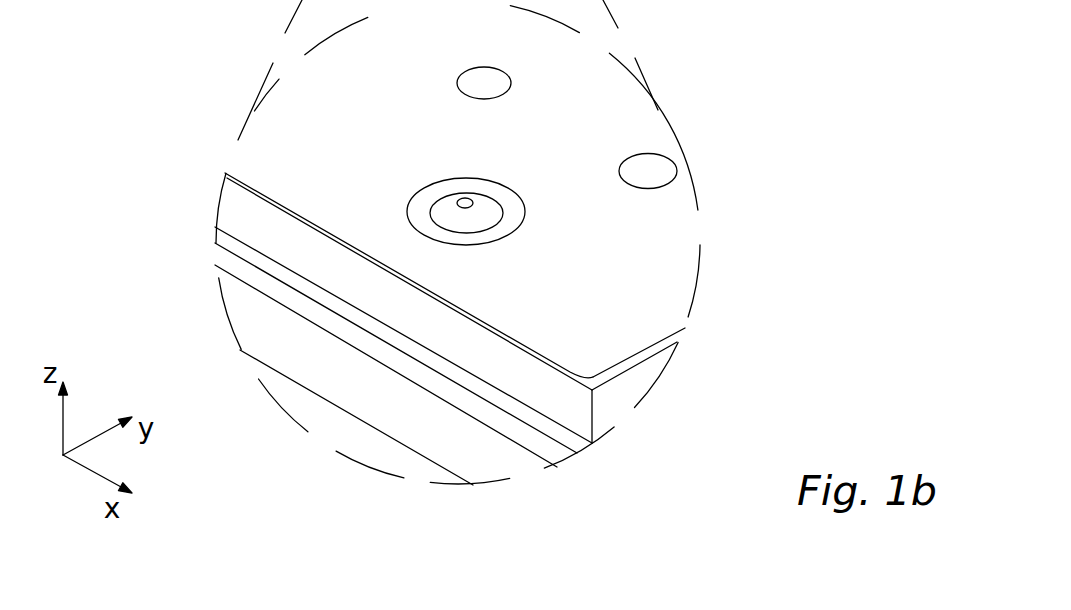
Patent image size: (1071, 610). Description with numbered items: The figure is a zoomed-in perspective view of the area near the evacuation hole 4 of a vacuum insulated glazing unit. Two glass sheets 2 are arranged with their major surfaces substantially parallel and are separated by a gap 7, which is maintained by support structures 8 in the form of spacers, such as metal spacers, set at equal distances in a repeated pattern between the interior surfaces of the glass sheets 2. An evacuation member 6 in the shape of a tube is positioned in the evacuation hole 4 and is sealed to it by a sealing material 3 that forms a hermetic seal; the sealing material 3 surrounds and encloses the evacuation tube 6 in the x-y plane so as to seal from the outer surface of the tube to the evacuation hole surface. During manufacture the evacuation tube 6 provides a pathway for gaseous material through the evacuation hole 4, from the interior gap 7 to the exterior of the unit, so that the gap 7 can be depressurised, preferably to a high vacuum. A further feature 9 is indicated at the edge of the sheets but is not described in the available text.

The glass sheets 2 is at (298, 295).
The sealing material 3 is at (438, 215).
The evacuation hole 4 is at (451, 176).
The evacuation member 6 is at (465, 205).
The gap 7 is at (465, 397).
The support structures 8 is at (490, 85).
The chamfered edge 9 is at (589, 371).